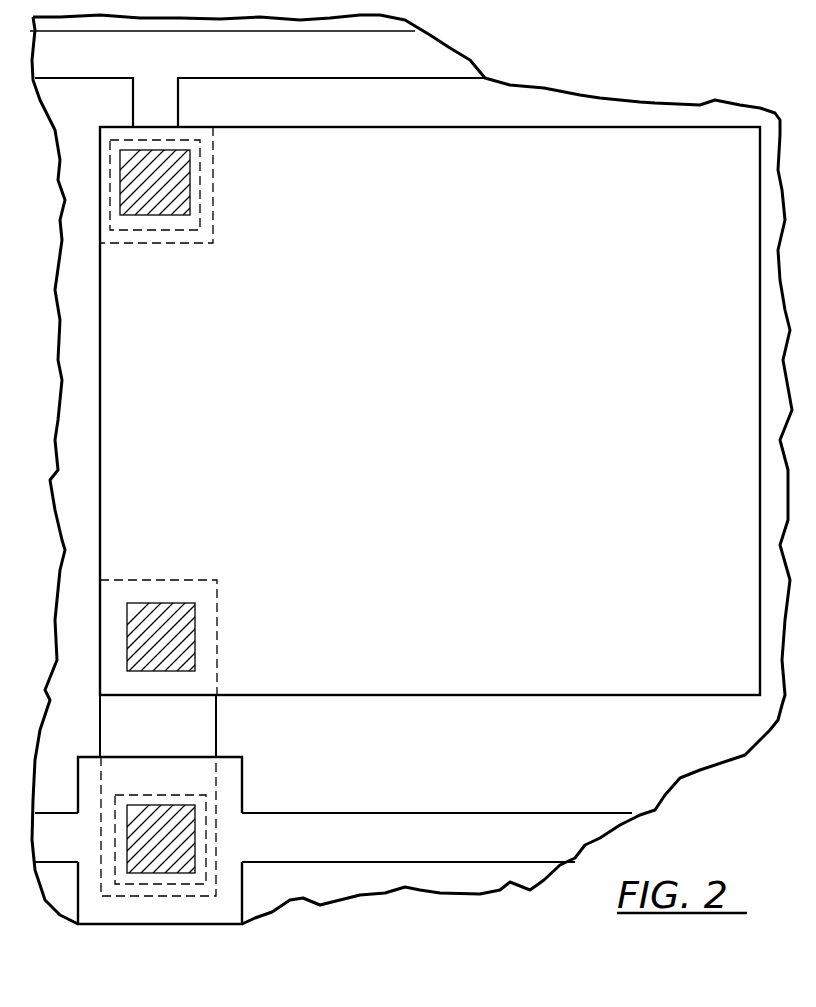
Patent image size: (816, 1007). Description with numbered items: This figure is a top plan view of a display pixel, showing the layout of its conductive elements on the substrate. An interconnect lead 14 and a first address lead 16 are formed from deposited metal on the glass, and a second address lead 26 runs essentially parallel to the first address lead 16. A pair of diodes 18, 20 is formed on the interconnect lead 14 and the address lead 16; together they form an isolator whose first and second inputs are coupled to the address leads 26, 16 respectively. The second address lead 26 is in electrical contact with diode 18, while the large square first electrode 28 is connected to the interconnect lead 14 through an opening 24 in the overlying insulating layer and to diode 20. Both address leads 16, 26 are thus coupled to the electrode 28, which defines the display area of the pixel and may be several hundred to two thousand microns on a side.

The interconnect lead 14 is at (200, 728).
The first address lead 16 is at (163, 97).
The diode 18 is at (208, 810).
The diode 20 is at (200, 178).
The opening 24 is at (197, 637).
The second address lead 26 is at (438, 835).
The first electrode 28 is at (400, 685).